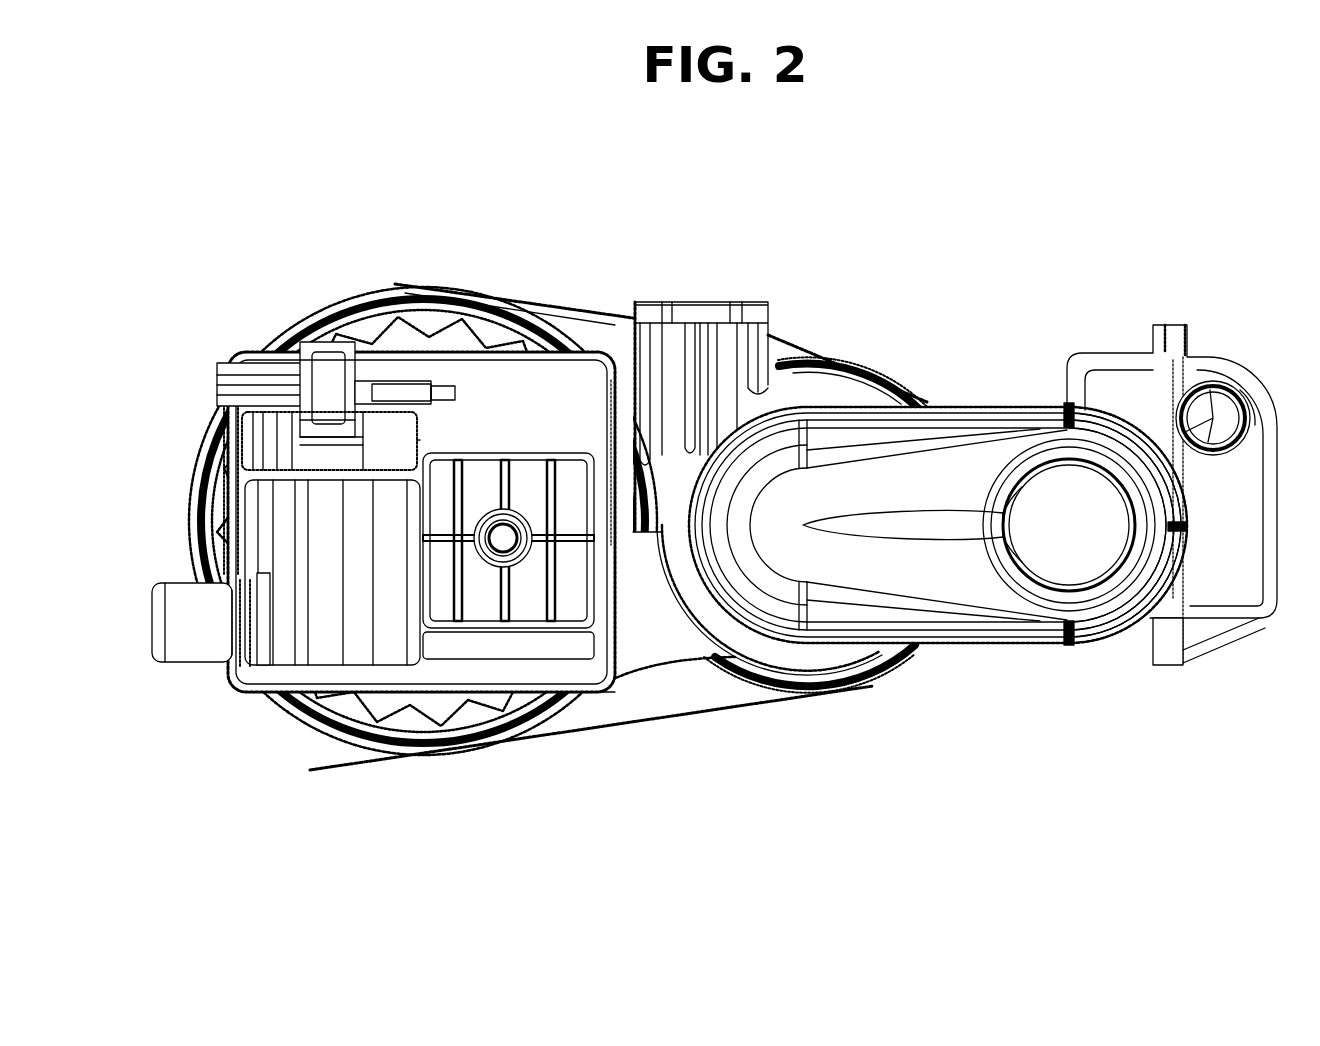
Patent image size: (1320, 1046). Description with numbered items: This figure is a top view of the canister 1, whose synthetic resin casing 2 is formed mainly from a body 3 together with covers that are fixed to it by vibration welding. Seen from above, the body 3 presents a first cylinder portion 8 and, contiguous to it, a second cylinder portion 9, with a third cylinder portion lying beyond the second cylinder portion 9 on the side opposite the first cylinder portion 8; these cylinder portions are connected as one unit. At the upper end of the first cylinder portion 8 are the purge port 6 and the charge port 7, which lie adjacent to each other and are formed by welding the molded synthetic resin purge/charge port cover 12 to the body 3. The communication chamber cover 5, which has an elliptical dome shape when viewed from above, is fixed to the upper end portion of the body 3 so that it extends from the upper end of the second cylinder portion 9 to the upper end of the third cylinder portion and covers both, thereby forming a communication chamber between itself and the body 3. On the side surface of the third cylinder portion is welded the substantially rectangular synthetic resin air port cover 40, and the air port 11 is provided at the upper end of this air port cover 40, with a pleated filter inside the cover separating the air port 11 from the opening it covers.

The canister 1 is at (722, 543).
The casing 2 is at (690, 698).
The body 3 is at (615, 716).
The communication chamber cover 5 is at (948, 456).
The purge port 6 is at (512, 543).
The charge port 7 is at (193, 652).
The first cylinder portion 8 is at (498, 742).
The second cylinder portion 9 is at (773, 688).
The air port 11 is at (1228, 417).
The purge/charge port cover 12 is at (527, 322).
The air port cover 40 is at (1220, 606).